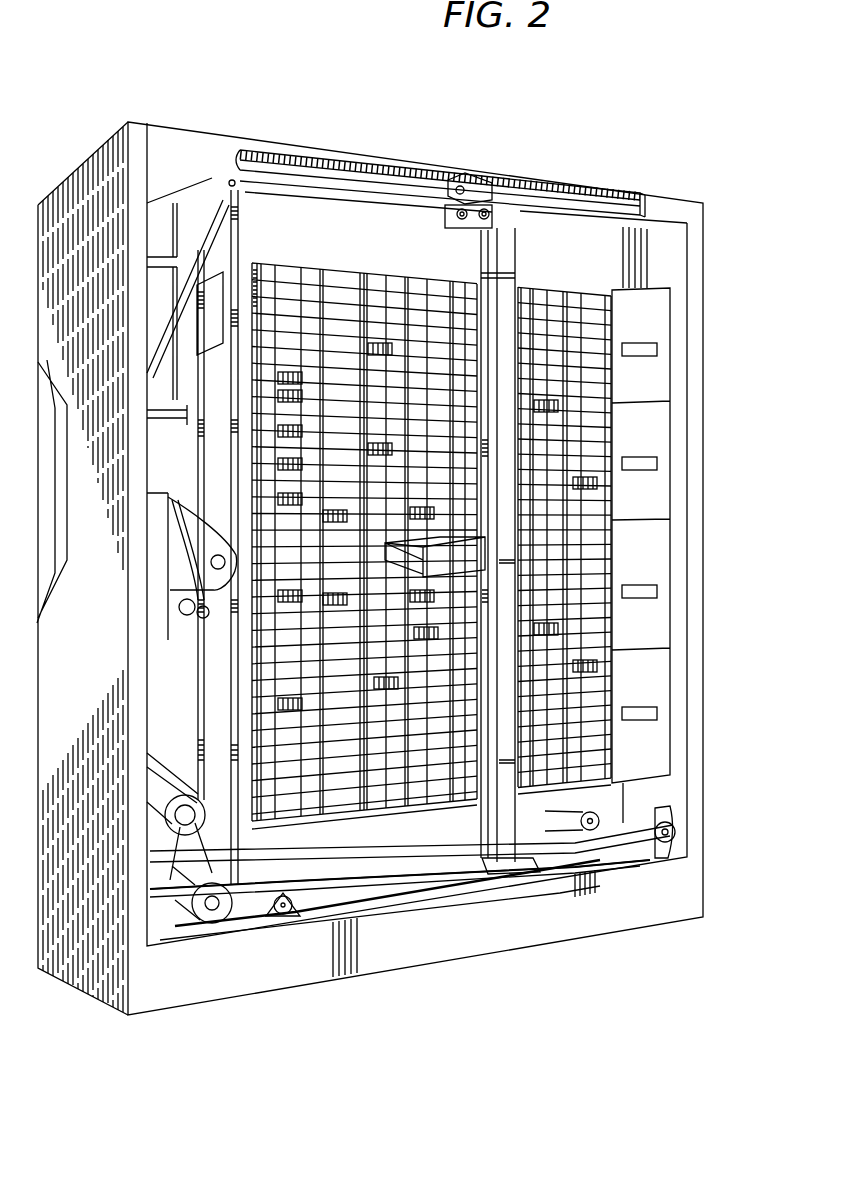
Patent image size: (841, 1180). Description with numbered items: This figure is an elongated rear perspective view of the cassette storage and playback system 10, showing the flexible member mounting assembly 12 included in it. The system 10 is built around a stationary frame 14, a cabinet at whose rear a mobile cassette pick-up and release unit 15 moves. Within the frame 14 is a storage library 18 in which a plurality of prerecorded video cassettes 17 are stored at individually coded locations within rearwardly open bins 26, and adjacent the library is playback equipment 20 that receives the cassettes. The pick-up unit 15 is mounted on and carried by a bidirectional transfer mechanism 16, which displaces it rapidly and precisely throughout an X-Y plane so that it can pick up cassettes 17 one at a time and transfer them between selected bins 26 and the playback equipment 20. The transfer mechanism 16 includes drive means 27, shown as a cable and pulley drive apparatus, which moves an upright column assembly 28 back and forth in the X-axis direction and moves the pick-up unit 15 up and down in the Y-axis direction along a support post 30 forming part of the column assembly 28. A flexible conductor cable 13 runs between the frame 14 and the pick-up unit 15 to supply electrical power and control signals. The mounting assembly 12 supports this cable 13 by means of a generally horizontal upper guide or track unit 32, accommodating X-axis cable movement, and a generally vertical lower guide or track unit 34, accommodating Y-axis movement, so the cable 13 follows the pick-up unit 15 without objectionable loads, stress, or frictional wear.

The cassette storage and playback system 10 is at (502, 162).
The flexible member mounting assembly 12 is at (573, 287).
The conductor cable 13 is at (448, 204).
The frame 14 is at (100, 968).
The cassette pick-up and release unit 15 is at (476, 291).
The bidirectional transfer mechanism 16 is at (490, 862).
The video cassettes 17 is at (306, 243).
The storage library 18 is at (488, 856).
The playback equipment 20 is at (648, 423).
The bins 26 is at (278, 842).
The drive means 27 is at (252, 910).
The upright column assembly 28 is at (560, 527).
The support post 30 is at (495, 270).
The upper guide or track unit 32 is at (475, 173).
The lower guide or track unit 34 is at (560, 608).